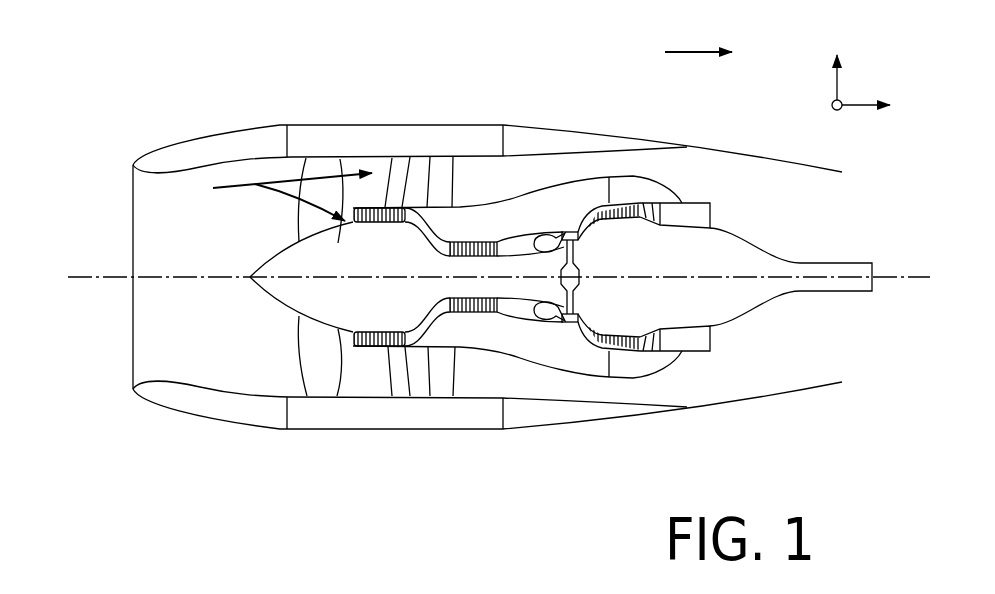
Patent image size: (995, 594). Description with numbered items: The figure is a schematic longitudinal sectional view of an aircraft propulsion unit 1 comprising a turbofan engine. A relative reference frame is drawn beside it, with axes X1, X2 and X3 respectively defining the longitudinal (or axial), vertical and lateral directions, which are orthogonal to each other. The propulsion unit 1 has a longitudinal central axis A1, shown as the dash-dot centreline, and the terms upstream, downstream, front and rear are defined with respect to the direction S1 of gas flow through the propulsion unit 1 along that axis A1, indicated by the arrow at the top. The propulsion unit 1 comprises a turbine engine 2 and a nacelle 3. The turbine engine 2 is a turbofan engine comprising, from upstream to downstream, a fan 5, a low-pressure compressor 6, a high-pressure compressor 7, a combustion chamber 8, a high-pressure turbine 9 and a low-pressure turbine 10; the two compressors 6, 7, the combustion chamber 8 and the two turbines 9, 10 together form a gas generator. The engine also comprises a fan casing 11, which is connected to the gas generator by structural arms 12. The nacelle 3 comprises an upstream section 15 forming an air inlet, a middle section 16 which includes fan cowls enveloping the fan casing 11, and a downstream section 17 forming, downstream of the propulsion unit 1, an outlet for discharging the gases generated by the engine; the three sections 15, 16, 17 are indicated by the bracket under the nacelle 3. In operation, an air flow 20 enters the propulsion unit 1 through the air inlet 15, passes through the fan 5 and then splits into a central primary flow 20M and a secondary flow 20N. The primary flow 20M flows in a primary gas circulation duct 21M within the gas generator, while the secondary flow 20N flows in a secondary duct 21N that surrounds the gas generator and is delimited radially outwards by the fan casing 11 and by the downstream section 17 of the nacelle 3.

The propulsion unit 1 is at (222, 76).
The turbine engine 2 is at (736, 199).
The nacelle 3 is at (528, 510).
The fan 5 is at (310, 347).
The low-pressure compressor 6 is at (377, 203).
The high-pressure compressor 7 is at (485, 240).
The combustion chamber 8 is at (543, 231).
The high-pressure turbine 9 is at (595, 205).
The low-pressure turbine 10 is at (654, 201).
The fan casing 11 is at (352, 393).
The structural arms 12 is at (405, 176).
The upstream section 15 is at (240, 428).
The middle section 16 is at (352, 430).
The downstream section 17 is at (560, 425).
The air flow 20 is at (223, 182).
The secondary flow 20N is at (317, 174).
The primary flow 20M is at (300, 204).
The secondary duct 21N is at (475, 172).
The primary gas circulation duct 21M is at (518, 241).
The longitudinal central axis A1 is at (80, 275).
The direction of gas flow S1 is at (697, 50).
The longitudinal direction X1 is at (887, 104).
The vertical direction X2 is at (845, 59).
The lateral direction X3 is at (828, 123).